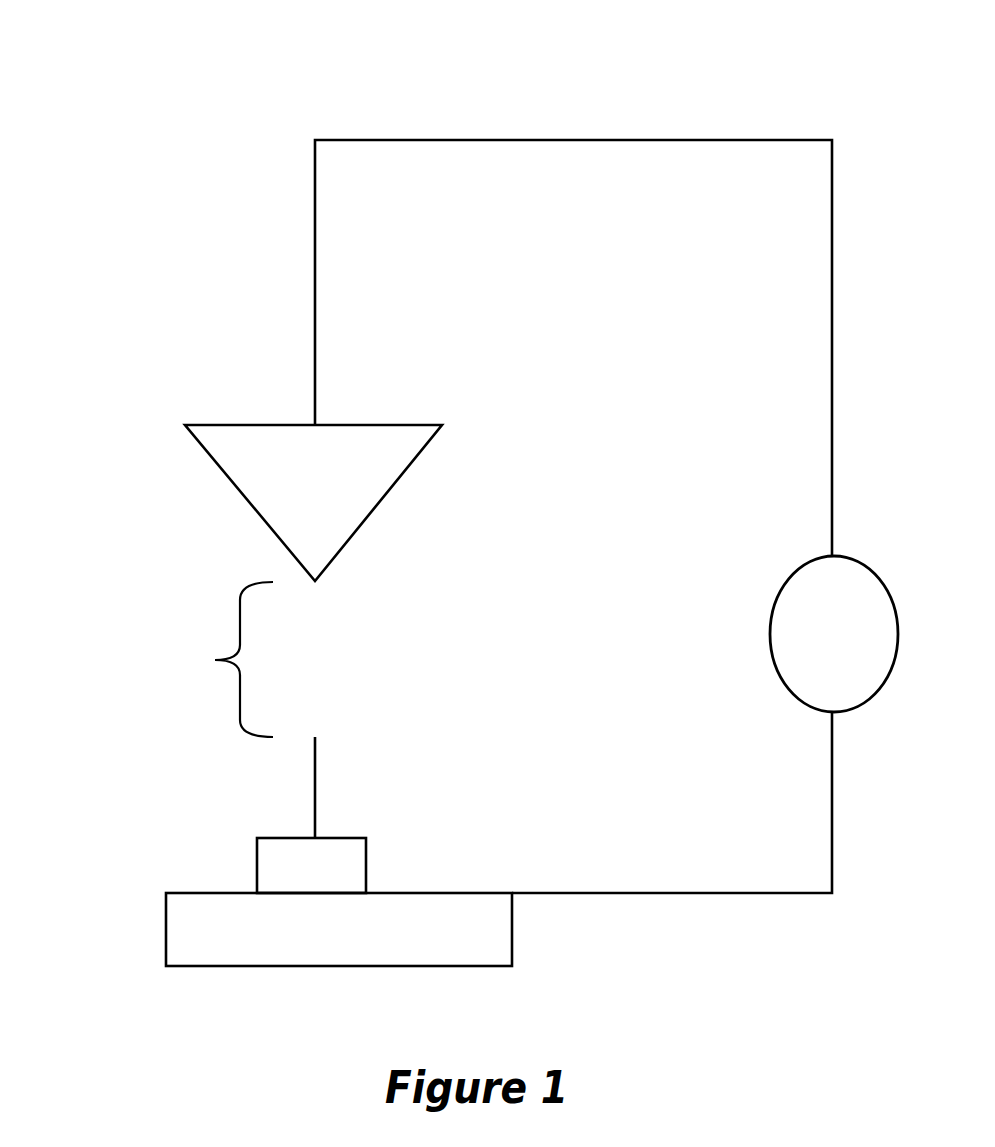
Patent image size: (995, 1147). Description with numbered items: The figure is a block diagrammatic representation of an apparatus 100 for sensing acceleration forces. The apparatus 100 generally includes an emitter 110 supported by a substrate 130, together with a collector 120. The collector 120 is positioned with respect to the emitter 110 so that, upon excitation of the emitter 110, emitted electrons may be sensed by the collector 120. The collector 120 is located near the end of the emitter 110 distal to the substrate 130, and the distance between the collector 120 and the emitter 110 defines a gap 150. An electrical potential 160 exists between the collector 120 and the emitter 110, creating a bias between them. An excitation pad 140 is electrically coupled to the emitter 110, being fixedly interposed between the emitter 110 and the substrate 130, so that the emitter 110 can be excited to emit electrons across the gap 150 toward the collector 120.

The apparatus 100 is at (157, 128).
The emitter 110 is at (357, 766).
The collector 120 is at (313, 503).
The substrate 130 is at (339, 929).
The excitation pad 140 is at (311, 865).
The gap 150 is at (213, 660).
The electrical potential 160 is at (834, 634).